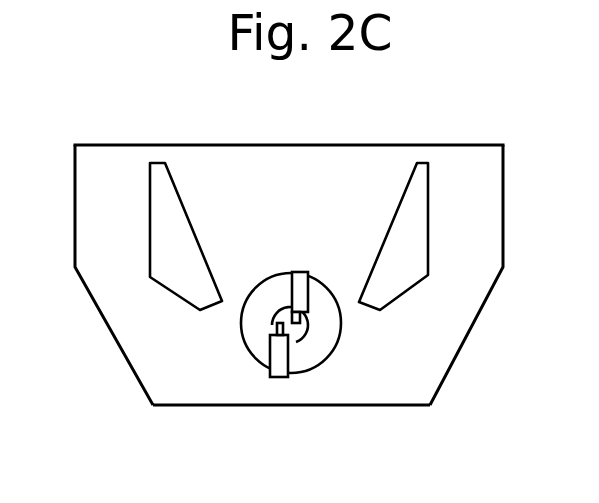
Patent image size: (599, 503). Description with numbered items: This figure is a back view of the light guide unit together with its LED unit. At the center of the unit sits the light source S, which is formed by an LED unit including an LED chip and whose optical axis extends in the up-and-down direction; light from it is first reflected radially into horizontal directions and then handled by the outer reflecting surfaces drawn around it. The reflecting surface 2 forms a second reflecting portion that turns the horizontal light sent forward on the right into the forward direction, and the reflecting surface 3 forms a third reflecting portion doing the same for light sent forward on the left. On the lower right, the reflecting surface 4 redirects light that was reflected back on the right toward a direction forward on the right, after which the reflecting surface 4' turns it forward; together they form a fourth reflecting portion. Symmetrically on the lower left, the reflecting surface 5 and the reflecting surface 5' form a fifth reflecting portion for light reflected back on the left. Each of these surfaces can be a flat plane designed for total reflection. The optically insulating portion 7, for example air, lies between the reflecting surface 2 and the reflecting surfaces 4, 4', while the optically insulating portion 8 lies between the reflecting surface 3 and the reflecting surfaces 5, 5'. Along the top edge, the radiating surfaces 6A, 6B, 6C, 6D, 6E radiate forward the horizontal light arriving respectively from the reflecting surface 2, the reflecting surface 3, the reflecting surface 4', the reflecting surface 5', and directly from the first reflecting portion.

The reflecting surface 2 is at (381, 236).
The reflecting surface 3 is at (197, 236).
The reflecting surface 4 is at (376, 425).
The reflecting surface 4' is at (489, 275).
The reflecting surface 5 is at (208, 424).
The reflecting surface 5' is at (99, 275).
The optically insulating portion 7 is at (416, 262).
The optically insulating portion 8 is at (180, 265).
The light source S is at (298, 333).
The radiating surface 6A is at (355, 134).
The radiating surface 6B is at (162, 134).
The radiating surface 6C is at (430, 134).
The radiating surface 6D is at (75, 134).
The radiating surface 6E is at (263, 134).